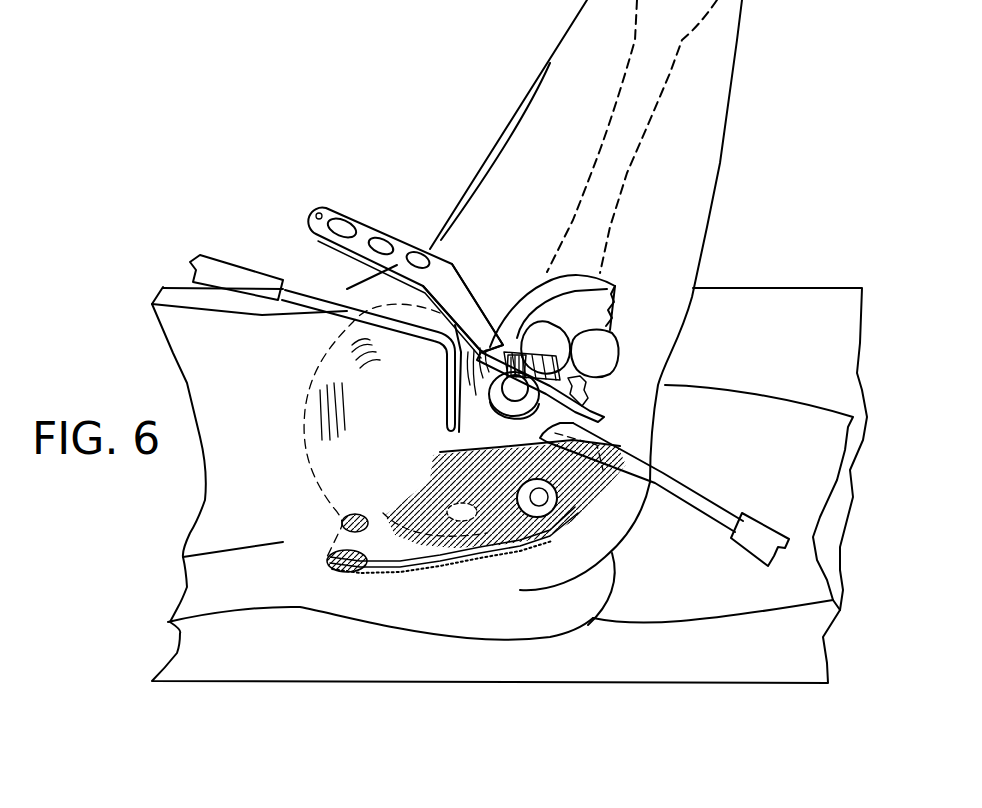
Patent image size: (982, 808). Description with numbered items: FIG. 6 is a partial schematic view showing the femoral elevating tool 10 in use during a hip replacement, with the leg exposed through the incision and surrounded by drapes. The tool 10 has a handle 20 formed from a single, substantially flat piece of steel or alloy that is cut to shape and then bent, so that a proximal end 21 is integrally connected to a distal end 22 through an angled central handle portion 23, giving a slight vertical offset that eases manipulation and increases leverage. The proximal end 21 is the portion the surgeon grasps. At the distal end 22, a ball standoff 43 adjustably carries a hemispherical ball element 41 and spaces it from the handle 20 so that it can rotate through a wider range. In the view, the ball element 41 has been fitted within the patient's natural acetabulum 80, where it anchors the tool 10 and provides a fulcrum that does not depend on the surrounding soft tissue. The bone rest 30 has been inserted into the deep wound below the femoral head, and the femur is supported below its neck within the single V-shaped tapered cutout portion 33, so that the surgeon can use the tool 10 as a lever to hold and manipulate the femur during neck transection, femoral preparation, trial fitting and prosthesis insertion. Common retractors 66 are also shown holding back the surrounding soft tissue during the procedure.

The femoral elevating tool 10 is at (475, 292).
The handle 20 is at (475, 292).
The proximal end 21 is at (366, 226).
The distal end 22 is at (592, 414).
The central handle portion 23 is at (470, 288).
The bone rest 30 is at (578, 382).
The V-shaped tapered cutout portion 33 is at (615, 335).
The hemispherical ball element 41 is at (490, 418).
The ball standoff 43 is at (506, 376).
The retractors 66 is at (340, 297).
The acetabulum 80 is at (441, 450).